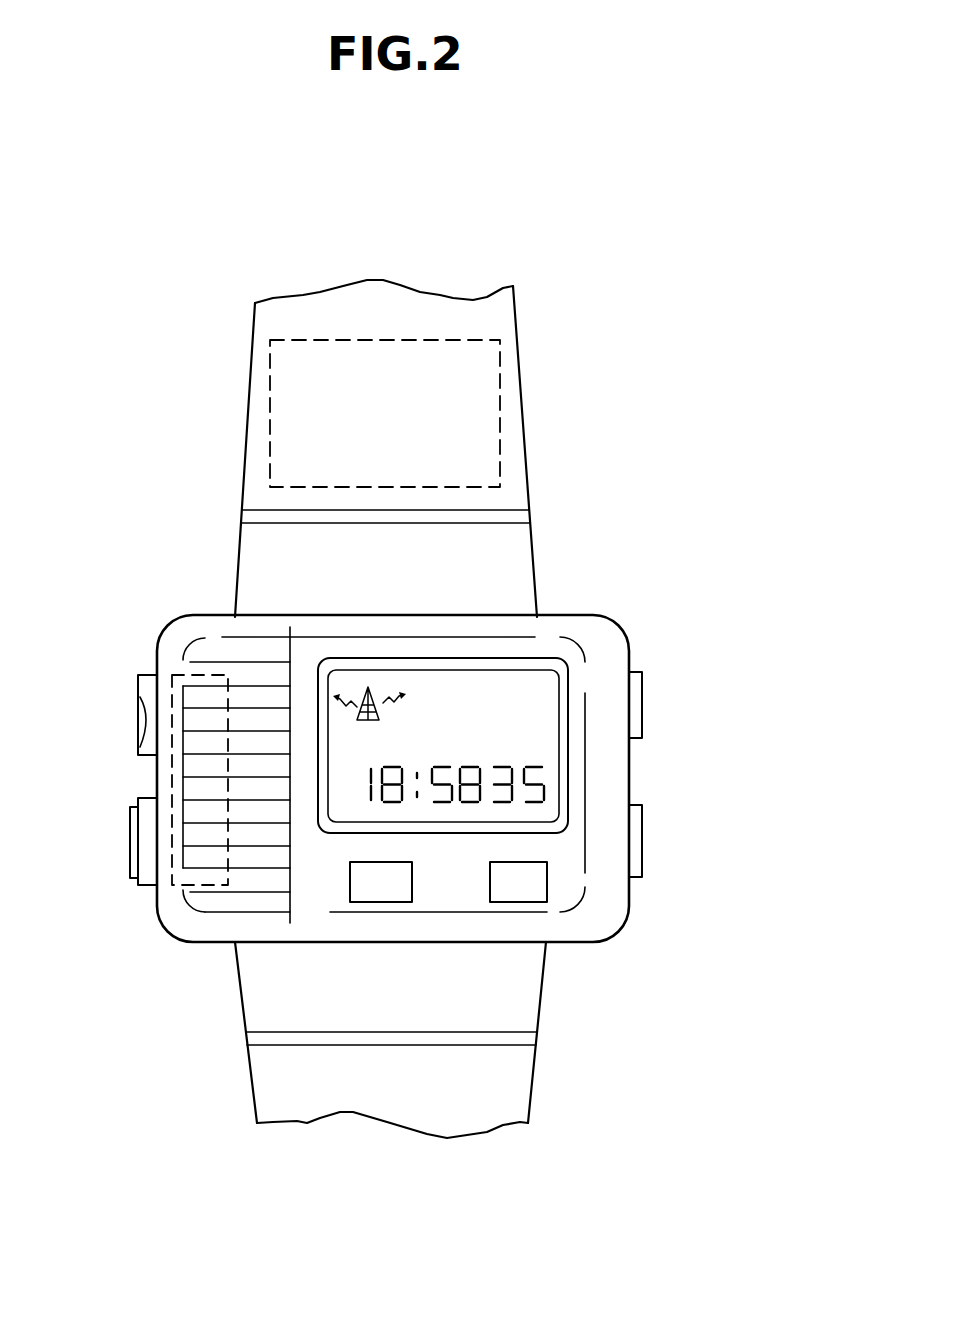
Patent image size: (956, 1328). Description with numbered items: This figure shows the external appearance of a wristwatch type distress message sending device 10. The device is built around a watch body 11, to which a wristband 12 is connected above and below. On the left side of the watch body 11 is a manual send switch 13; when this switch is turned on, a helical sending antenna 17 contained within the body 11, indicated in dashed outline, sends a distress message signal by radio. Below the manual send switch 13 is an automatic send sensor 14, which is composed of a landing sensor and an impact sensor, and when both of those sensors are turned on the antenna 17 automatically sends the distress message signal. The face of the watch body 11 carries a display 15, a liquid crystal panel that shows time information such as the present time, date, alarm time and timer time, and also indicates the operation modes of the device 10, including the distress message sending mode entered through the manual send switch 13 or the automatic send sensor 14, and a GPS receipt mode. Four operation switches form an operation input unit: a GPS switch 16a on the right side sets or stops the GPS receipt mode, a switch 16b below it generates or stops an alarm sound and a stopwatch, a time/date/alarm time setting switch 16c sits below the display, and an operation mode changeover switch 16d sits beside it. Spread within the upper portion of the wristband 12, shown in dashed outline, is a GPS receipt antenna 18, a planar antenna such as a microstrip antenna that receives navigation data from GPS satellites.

The distress message sending device 10 is at (566, 254).
The watch body 11 is at (167, 620).
The wristband 12 is at (525, 462).
The manual send switch 13 is at (138, 703).
The automatic send sensor 14 is at (132, 848).
The display 15 is at (562, 668).
The GPS switch 16a is at (642, 713).
The alarm/stopwatch switch 16b is at (642, 843).
The time/date/alarm time setting switch 16c is at (545, 900).
The operation mode changeover switch 16d is at (380, 902).
The helical sending antenna 17 is at (172, 885).
The GPS receipt antenna 18 is at (507, 377).